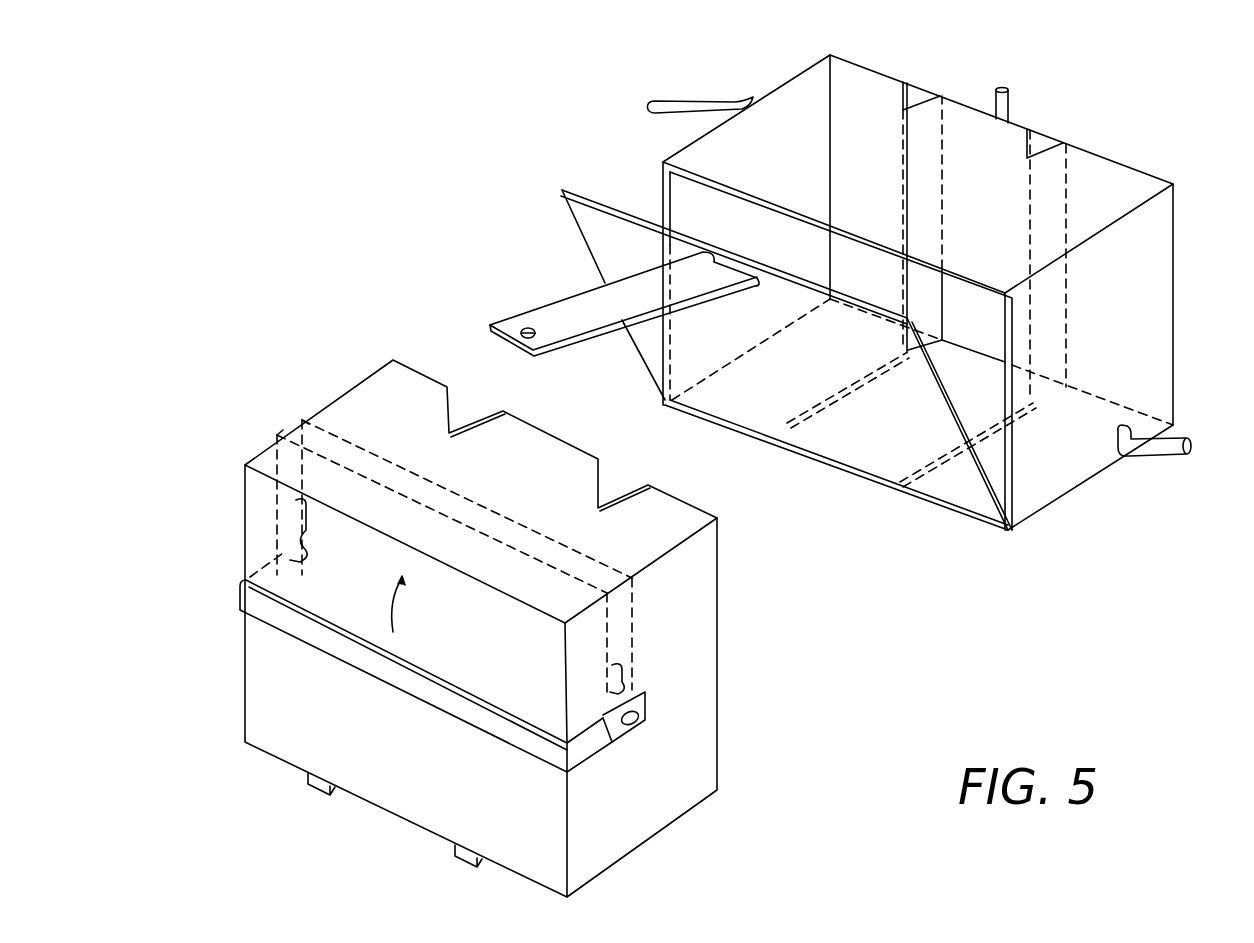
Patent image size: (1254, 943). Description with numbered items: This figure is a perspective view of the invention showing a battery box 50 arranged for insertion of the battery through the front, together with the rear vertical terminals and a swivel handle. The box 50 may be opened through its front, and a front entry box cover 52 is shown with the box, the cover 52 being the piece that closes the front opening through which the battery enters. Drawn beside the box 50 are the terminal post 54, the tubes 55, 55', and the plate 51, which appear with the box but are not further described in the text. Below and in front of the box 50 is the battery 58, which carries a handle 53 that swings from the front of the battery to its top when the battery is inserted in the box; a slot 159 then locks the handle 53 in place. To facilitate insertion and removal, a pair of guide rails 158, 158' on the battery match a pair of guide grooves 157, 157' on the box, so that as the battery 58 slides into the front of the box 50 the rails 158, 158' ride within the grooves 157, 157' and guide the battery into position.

The box 50 is at (1047, 478).
The plate 51 is at (567, 320).
The front entry box cover 52 is at (872, 456).
The handle 53 is at (447, 703).
The post 54 is at (996, 113).
The hose 55 is at (694, 87).
The hose 55' is at (1173, 464).
The lower housing 58 is at (538, 852).
The guide groove 157 is at (826, 300).
The guide groove 157' is at (977, 346).
The guide rail 158 is at (281, 809).
The guide rail 158' is at (428, 885).
The slot 159 is at (635, 722).